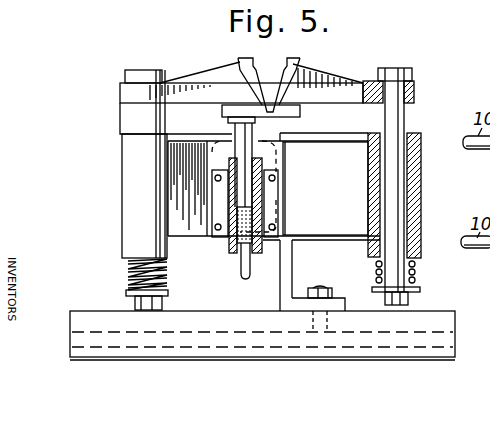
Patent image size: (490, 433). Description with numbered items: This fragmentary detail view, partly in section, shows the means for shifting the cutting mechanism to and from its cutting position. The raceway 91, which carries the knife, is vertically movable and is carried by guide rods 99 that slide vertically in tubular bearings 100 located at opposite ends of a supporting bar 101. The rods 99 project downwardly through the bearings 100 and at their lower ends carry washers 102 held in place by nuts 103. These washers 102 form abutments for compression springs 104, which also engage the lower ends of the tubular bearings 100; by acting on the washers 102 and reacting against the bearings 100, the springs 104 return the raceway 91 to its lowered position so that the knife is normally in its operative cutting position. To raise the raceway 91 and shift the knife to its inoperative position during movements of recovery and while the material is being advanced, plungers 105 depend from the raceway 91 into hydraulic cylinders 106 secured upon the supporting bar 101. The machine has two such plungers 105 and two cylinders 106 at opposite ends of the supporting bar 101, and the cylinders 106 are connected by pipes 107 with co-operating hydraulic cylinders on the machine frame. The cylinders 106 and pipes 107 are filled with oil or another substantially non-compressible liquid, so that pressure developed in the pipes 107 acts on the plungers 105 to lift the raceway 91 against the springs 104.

The raceway 91 is at (293, 62).
The guide rods 99 is at (138, 118).
The tubular bearings 100 is at (130, 198).
The supporting bar 101 is at (274, 195).
The washers 102 is at (126, 293).
The nuts 103 is at (162, 304).
The compression springs 104 is at (128, 262).
The plungers 105 is at (263, 128).
The hydraulic cylinders 106 is at (262, 248).
The pipes 107 is at (244, 279).